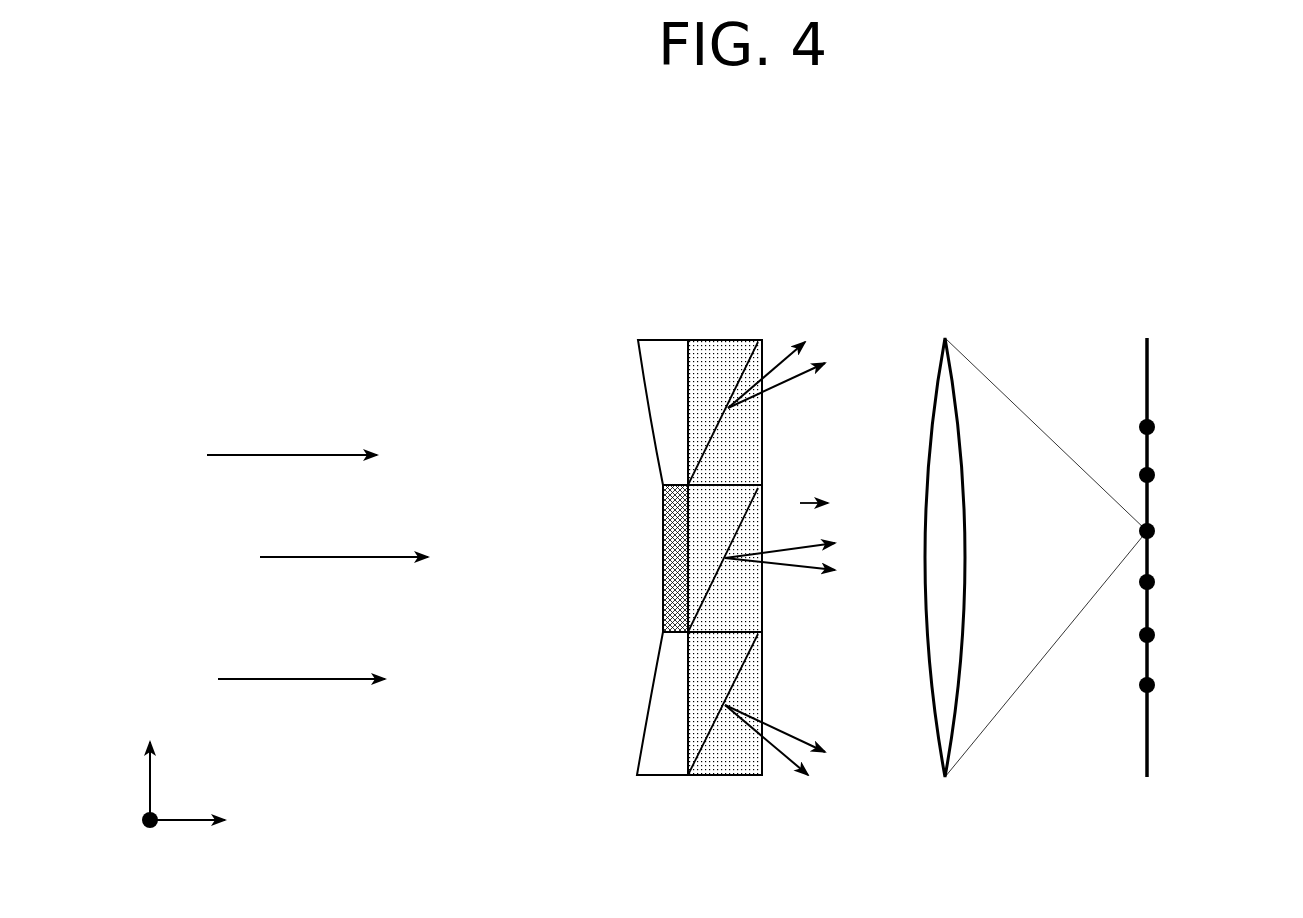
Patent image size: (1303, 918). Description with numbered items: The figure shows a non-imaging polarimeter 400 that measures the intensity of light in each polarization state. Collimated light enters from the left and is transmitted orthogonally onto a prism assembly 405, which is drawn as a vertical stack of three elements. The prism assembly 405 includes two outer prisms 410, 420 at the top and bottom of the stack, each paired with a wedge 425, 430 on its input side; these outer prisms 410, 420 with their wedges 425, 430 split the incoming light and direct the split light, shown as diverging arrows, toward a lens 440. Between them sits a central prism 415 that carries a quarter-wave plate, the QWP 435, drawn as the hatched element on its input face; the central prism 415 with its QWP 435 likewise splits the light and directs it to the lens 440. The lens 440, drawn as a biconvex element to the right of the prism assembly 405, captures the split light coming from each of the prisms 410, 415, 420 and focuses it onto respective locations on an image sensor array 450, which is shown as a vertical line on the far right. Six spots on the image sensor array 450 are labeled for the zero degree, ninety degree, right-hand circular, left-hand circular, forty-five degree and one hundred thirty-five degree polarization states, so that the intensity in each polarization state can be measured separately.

The non-imaging polarimeter 400 is at (215, 155).
The prism assembly 405 is at (708, 287).
The outer prism 410 is at (708, 378).
The central prism 415 is at (742, 593).
The outer prism 420 is at (730, 758).
The wedge 425 is at (671, 388).
The wedge 430 is at (665, 732).
The QWP 435 is at (676, 583).
The lens 440 is at (957, 358).
The image sensor array 450 is at (1153, 358).